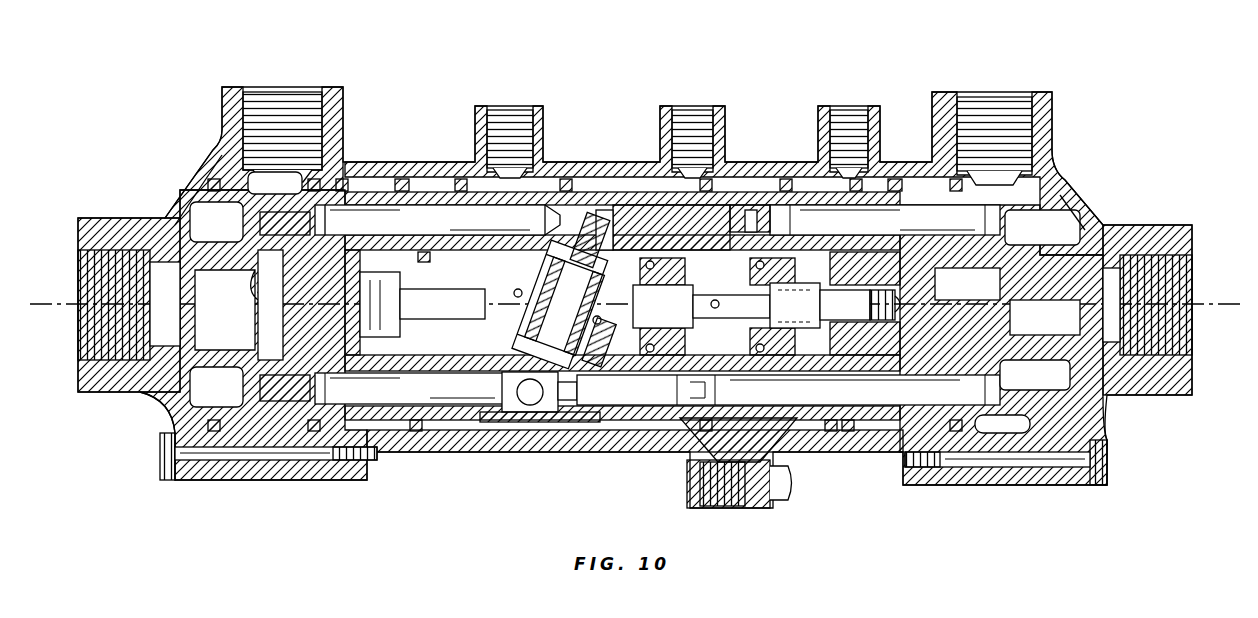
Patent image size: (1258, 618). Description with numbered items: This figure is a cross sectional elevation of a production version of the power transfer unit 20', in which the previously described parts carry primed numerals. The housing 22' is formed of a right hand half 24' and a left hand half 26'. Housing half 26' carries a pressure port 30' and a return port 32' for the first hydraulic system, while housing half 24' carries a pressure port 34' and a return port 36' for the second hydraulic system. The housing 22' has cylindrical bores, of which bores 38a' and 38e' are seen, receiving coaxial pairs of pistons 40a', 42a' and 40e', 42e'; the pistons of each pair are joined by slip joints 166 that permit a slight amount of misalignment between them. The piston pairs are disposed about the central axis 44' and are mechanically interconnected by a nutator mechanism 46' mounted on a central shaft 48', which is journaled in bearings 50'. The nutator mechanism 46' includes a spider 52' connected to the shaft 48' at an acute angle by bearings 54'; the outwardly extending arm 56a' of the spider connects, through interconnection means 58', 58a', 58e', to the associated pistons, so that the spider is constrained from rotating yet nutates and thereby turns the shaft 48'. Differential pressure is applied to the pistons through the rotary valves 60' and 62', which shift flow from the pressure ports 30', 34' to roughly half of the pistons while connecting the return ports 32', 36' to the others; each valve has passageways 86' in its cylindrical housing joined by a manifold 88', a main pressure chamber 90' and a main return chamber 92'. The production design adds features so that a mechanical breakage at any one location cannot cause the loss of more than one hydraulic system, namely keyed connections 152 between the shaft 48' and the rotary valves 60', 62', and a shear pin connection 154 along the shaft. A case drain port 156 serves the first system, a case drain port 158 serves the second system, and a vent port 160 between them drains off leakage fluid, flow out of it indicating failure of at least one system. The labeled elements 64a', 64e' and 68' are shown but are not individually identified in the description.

The power transfer unit 20' is at (605, 136).
The housing 22' is at (738, 477).
The right hand half 24' is at (900, 131).
The left hand half 26' is at (424, 148).
The pressure port 30' is at (282, 106).
The return port 32' is at (105, 305).
The pressure port 34' is at (1002, 116).
The return port 36' is at (1172, 310).
The cylindrical bore 38a' is at (573, 156).
The cylindrical bore 38e' is at (604, 463).
The piston 40a' is at (885, 220).
The piston 40e' is at (788, 390).
The piston 42a' is at (437, 220).
The piston 42e' is at (410, 388).
The central axis 44' is at (91, 291).
The nutator mechanism 46' is at (606, 431).
The central shaft 48' is at (422, 304).
The bearings 50' is at (615, 368).
The spider 52' is at (691, 165).
The bearings 54' is at (599, 403).
The outwardly extending arm 56a' is at (588, 178).
The interconnection means 58' is at (520, 433).
The interconnection means 58a' is at (627, 150).
The interconnection means 58e' is at (540, 452).
The rotary valve 60' is at (239, 305).
The rotary valve 62' is at (1112, 224).
The passage 64a' is at (1090, 196).
The passage 64e' is at (1093, 402).
The wobble plate 68' is at (561, 215).
The passageways 86' is at (633, 317).
The manifold 88' is at (639, 328).
The main pressure chamber 90' is at (967, 284).
The main return chamber 92' is at (1045, 317).
The keyed connections 152 is at (424, 252).
The shear pin connection 154 is at (763, 325).
The case drain port 156 is at (500, 106).
The case drain port 158 is at (820, 106).
The vent port 160 is at (700, 106).
The slip joints 166 is at (752, 208).